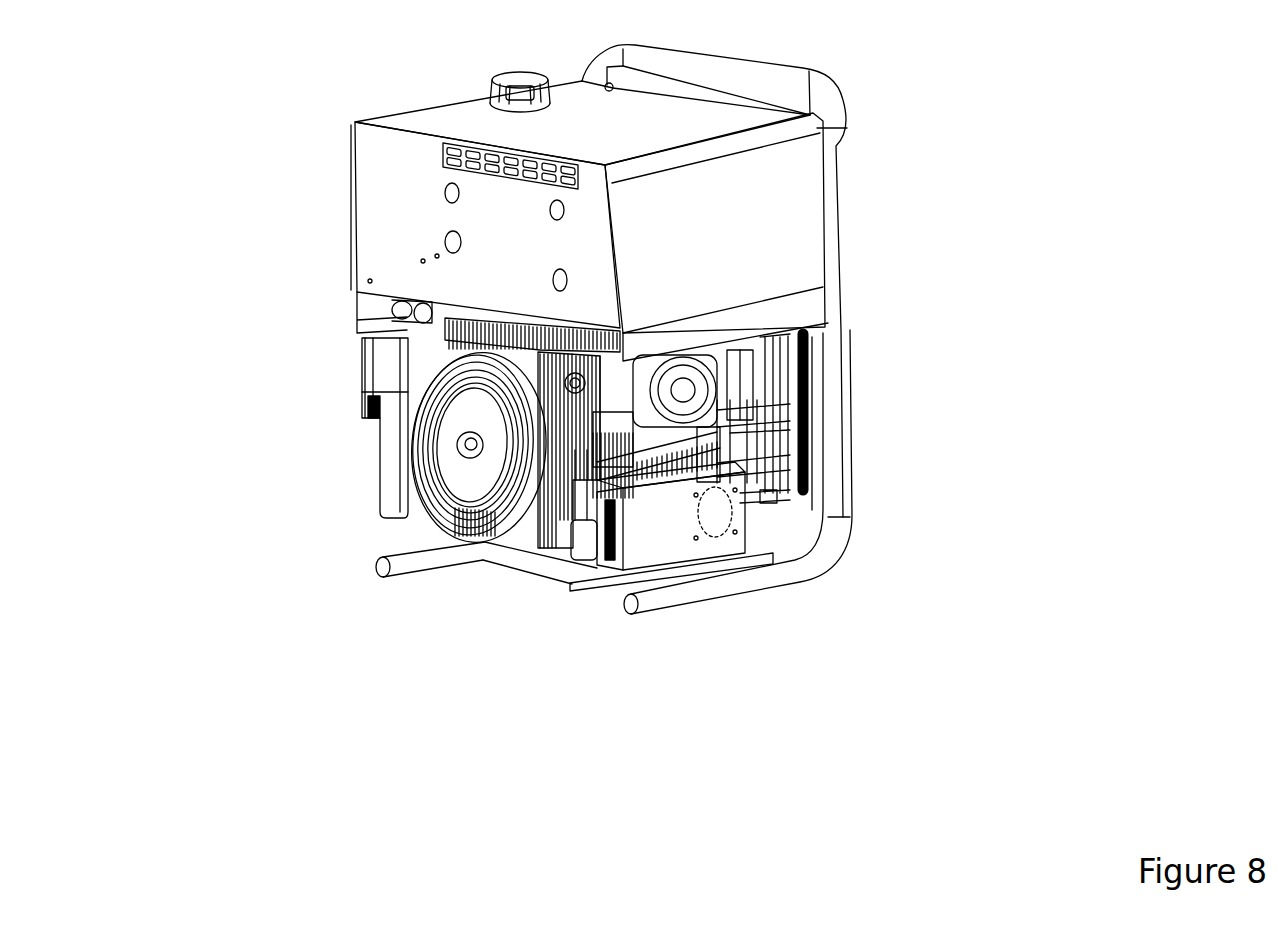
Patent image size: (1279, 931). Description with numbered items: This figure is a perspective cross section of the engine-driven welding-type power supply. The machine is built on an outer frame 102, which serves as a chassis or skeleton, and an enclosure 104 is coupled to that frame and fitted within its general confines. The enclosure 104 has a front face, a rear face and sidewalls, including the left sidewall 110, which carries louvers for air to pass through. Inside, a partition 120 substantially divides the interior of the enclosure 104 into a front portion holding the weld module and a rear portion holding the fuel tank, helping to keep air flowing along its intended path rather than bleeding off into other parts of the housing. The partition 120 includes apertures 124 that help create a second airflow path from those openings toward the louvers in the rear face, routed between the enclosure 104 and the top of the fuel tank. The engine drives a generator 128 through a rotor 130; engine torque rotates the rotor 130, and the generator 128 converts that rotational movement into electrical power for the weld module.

The outer frame 102 is at (830, 427).
The enclosure 104 is at (450, 120).
The left sidewall 110 is at (808, 233).
The partition 120 is at (407, 147).
The apertures 124 is at (429, 171).
The generator 128 is at (413, 387).
The rotor 130 is at (472, 440).